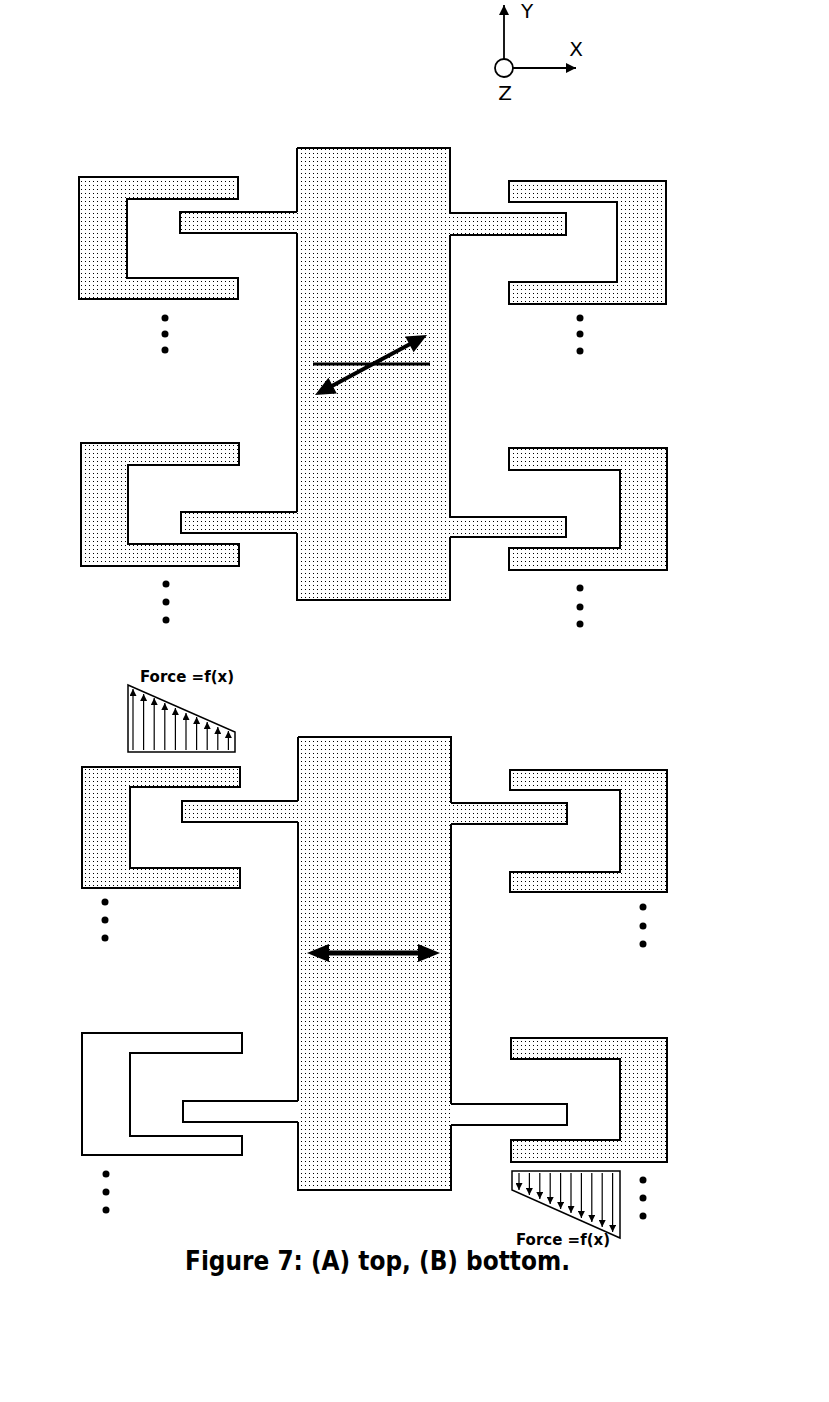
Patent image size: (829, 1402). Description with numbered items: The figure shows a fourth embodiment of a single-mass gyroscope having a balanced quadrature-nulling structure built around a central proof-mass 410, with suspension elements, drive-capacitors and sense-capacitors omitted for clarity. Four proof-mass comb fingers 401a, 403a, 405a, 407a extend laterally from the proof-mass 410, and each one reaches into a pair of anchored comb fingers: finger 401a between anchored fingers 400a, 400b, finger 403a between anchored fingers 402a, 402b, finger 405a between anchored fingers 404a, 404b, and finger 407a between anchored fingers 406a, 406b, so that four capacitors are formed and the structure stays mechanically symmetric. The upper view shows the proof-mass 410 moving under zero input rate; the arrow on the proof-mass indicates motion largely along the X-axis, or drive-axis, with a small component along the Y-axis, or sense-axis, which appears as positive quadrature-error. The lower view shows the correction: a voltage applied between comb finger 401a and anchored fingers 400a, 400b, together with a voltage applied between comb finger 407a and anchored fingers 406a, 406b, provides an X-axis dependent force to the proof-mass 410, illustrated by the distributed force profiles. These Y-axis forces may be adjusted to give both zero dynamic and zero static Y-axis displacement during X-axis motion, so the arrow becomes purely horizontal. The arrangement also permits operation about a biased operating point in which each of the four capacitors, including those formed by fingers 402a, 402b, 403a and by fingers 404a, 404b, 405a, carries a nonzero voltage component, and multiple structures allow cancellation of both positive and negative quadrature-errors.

In FIG. 7A, the anchored comb finger 400a is at (175, 182).
In FIG. 7B, the anchored comb finger 400a is at (135, 770).
In FIG. 7A, the anchored comb finger 400b is at (173, 288).
In FIG. 7B, the anchored comb finger 400b is at (173, 878).
In FIG. 7A, the proof-mass comb finger 401a is at (264, 213).
In FIG. 7B, the proof-mass comb finger 401a is at (243, 802).
In FIG. 7A, the anchored comb finger 402a is at (570, 185).
In FIG. 7B, the anchored comb finger 402a is at (572, 775).
In FIG. 7A, the anchored comb finger 402b is at (577, 290).
In FIG. 7B, the anchored comb finger 402b is at (577, 880).
In FIG. 7A, the proof-mass comb finger 403a is at (483, 213).
In FIG. 7B, the proof-mass comb finger 403a is at (485, 803).
In FIG. 7A, the anchored comb finger 404a is at (190, 452).
In FIG. 7B, the anchored comb finger 404a is at (192, 1040).
In FIG. 7A, the anchored comb finger 404b is at (188, 557).
In FIG. 7B, the anchored comb finger 404b is at (190, 1148).
In FIG. 7A, the proof-mass comb finger 405a is at (280, 522).
In FIG. 7B, the proof-mass comb finger 405a is at (283, 1112).
In FIG. 7A, the anchored comb finger 406a is at (590, 452).
In FIG. 7B, the anchored comb finger 406a is at (590, 1040).
In FIG. 7A, the anchored comb finger 406b is at (590, 557).
In FIG. 7B, the anchored comb finger 406b is at (590, 1150).
In FIG. 7A, the proof-mass comb finger 407a is at (478, 522).
In FIG. 7B, the proof-mass comb finger 407a is at (478, 1112).
In FIG. 7A, the proof-mass 410 is at (396, 158).
In FIG. 7B, the proof-mass 410 is at (428, 750).